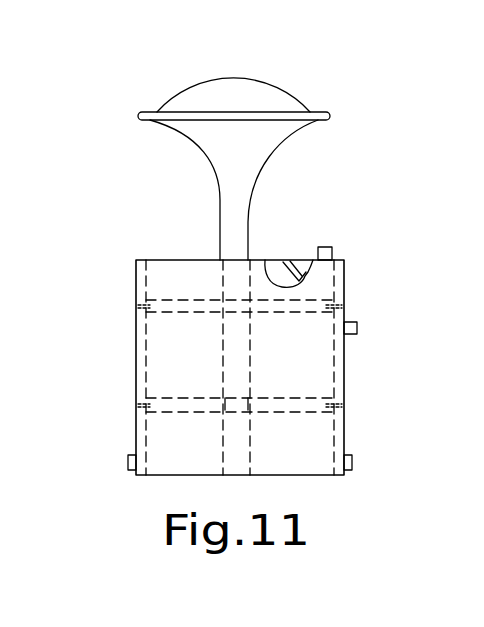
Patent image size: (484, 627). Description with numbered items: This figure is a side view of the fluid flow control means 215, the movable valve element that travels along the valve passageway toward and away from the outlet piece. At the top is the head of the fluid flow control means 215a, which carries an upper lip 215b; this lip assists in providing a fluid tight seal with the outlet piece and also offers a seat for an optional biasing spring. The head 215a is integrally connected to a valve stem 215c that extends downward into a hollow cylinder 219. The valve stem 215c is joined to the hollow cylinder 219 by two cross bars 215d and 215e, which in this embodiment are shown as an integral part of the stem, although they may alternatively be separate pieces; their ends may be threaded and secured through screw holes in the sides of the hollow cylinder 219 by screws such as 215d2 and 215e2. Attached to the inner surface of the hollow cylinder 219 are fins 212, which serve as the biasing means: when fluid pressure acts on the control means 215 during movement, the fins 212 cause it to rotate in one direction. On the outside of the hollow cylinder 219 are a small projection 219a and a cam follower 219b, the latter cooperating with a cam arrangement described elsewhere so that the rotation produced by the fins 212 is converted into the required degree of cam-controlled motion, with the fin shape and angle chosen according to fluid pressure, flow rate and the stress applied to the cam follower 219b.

The fluid flow control means 215 is at (310, 213).
The head of the fluid flow control means 215a is at (211, 86).
The upper lip 215b is at (322, 113).
The valve stem 215c is at (218, 190).
The fins 212 is at (302, 274).
The hollow cylinder 219 is at (345, 272).
The upper tab 219a is at (331, 249).
The cam follower 219b is at (358, 328).
The cross bar 215d is at (267, 300).
The screw 215d2 is at (136, 304).
The cross bar 215e is at (195, 397).
The lower retaining rib second portion 215e2 is at (136, 407).